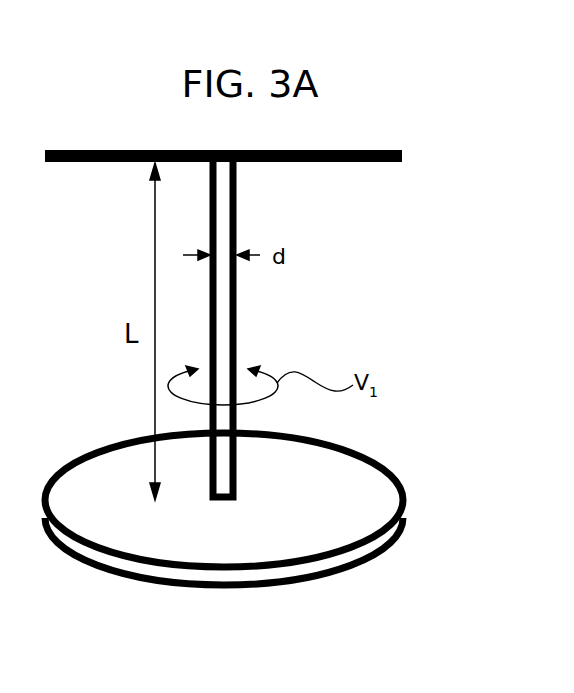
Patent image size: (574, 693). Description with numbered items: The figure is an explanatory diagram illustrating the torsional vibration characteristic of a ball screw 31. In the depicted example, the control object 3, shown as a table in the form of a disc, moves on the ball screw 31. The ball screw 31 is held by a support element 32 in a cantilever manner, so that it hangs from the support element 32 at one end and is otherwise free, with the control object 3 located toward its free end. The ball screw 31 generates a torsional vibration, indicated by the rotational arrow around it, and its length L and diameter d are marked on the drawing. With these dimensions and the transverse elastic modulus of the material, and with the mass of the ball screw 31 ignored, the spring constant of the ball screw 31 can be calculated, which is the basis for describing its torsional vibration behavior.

The control object 3 is at (358, 488).
The ball screw 31 is at (218, 343).
The support element 32 is at (365, 162).